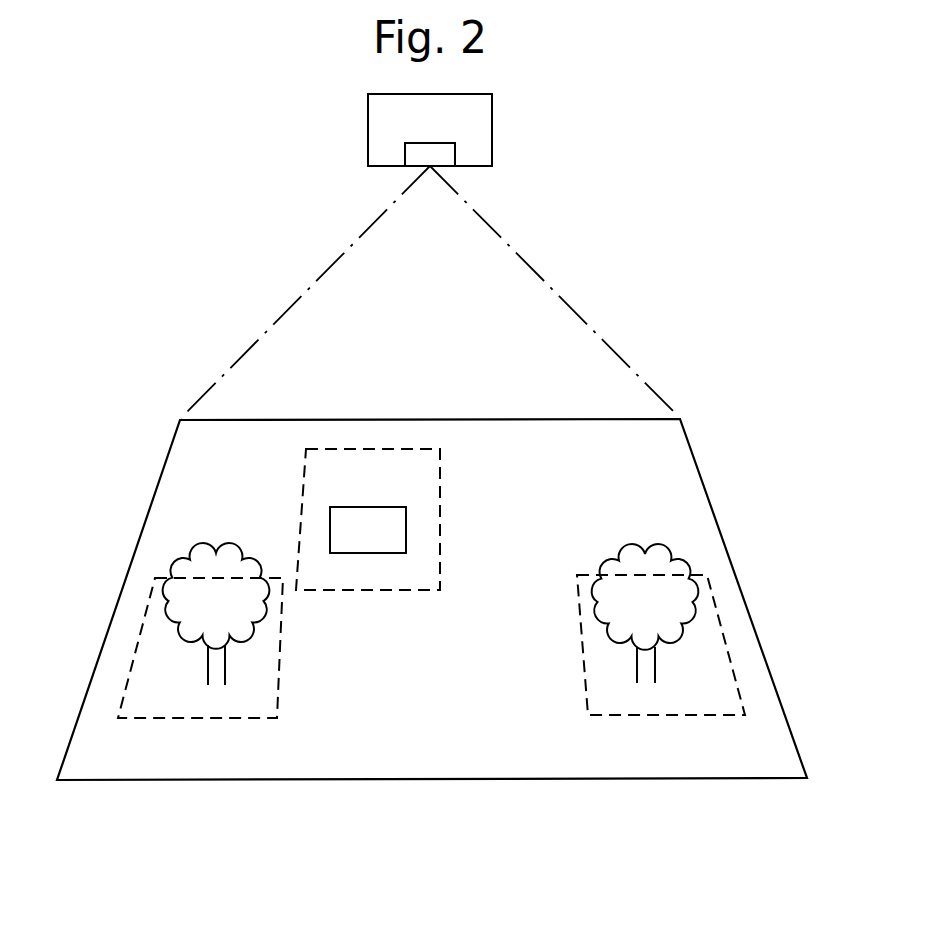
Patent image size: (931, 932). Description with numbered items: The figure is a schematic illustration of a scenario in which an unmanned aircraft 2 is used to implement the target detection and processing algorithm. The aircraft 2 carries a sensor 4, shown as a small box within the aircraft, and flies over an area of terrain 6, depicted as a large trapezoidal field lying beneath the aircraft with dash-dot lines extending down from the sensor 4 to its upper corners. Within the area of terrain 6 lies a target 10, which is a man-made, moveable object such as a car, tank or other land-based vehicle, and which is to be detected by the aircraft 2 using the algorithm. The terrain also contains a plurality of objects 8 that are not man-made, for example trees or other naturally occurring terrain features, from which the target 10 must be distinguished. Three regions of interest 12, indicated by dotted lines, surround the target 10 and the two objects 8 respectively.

The aircraft 2 is at (492, 133).
The sensor 4 is at (420, 154).
The area of terrain 6 is at (703, 480).
The objects 8 is at (208, 612).
The target 10 is at (356, 542).
The regions of interest 12 is at (440, 505).